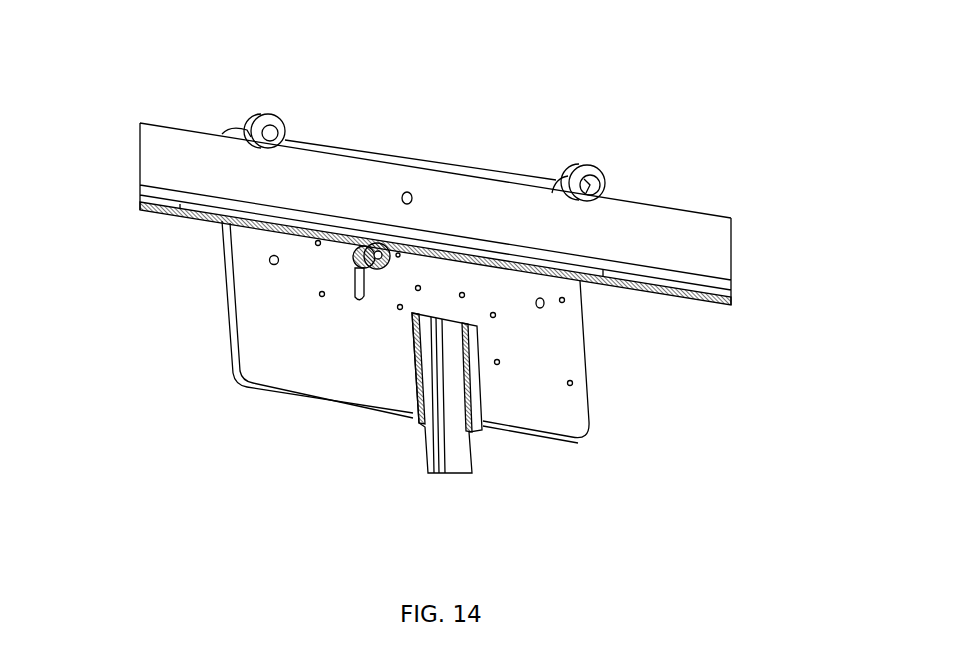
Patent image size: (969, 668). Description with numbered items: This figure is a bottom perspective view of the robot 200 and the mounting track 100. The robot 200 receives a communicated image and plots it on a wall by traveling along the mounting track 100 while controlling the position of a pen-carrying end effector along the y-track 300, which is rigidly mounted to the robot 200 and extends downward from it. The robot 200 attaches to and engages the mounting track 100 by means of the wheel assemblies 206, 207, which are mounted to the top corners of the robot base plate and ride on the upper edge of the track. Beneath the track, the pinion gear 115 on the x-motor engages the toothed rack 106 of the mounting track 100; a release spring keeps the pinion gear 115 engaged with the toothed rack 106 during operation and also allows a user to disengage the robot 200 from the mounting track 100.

The mounting track 100 is at (620, 230).
The toothed rack 106 is at (168, 212).
The pinion gear 115 is at (357, 272).
The robot 200 is at (563, 410).
The wheel assembly 206 is at (585, 165).
The wheel assembly 207 is at (268, 114).
The y-track 300 is at (462, 453).